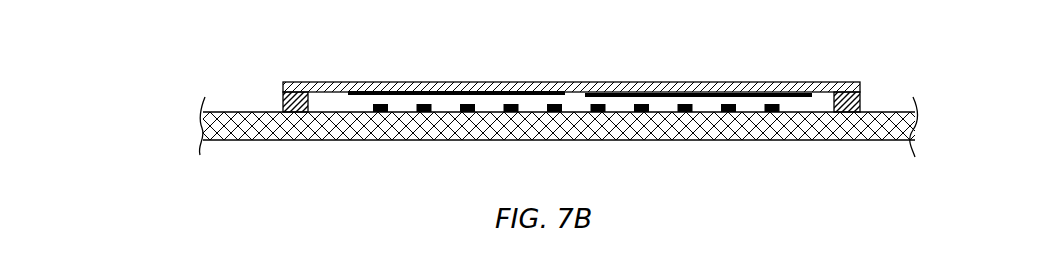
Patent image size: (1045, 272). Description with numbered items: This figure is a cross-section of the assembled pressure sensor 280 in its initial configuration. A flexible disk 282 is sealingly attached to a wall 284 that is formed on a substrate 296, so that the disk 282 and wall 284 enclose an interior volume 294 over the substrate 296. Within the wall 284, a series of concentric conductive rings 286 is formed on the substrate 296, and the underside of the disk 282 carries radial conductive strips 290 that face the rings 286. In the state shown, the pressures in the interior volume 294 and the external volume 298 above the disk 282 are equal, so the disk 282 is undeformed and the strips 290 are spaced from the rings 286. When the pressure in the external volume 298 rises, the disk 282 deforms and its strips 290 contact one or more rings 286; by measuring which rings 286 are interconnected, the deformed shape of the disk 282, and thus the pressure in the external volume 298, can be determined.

The pressure sensor 280 is at (388, 34).
The flexible disk 282 is at (740, 82).
The wall 284 is at (862, 102).
The conductive rings 286 is at (685, 113).
The radial conductive strips 290 is at (410, 94).
The interior volume 294 is at (582, 100).
The substrate 296 is at (457, 141).
The external volume 298 is at (512, 51).